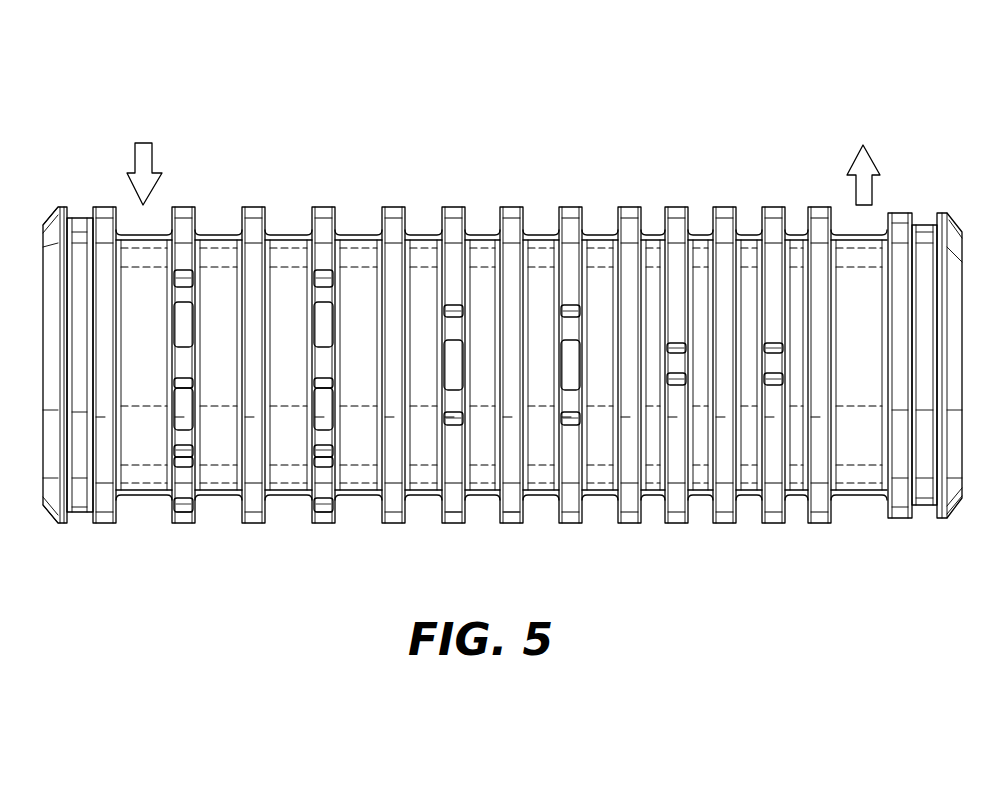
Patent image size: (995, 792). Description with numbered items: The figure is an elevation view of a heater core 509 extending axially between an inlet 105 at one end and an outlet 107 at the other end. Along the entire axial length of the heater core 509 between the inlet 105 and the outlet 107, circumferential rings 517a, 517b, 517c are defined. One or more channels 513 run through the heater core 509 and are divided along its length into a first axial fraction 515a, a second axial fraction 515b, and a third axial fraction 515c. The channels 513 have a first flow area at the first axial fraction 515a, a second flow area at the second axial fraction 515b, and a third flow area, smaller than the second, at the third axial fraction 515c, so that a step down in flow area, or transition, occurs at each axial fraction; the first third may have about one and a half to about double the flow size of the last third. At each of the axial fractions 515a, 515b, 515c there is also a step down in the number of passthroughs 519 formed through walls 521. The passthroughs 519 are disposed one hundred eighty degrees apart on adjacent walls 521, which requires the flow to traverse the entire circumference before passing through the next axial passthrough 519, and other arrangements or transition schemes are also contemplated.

The inlet 105 is at (143, 153).
The outlet 107 is at (863, 157).
The heater core 509 is at (250, 565).
The channels 513 is at (462, 327).
The first axial fraction 515a is at (259, 293).
The second axial fraction 515b is at (517, 271).
The third axial fraction 515c is at (734, 271).
The circumferential ring 517a is at (224, 349).
The circumferential ring 517b is at (602, 233).
The circumferential ring 517c is at (797, 233).
The passthroughs 519 is at (182, 455).
The walls 521 is at (510, 515).